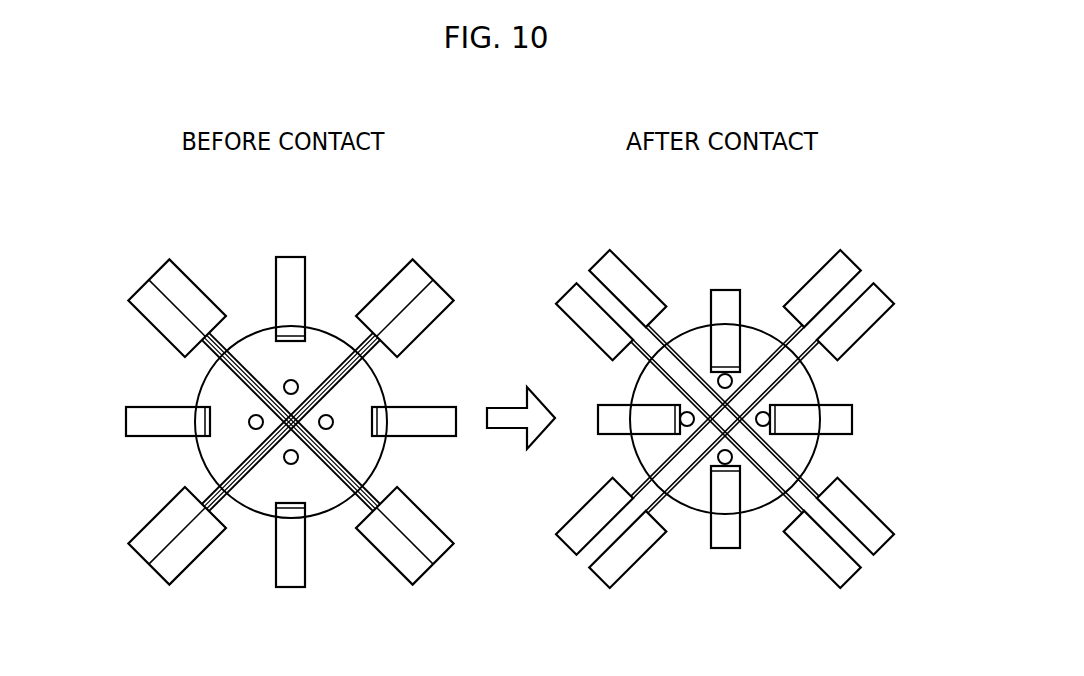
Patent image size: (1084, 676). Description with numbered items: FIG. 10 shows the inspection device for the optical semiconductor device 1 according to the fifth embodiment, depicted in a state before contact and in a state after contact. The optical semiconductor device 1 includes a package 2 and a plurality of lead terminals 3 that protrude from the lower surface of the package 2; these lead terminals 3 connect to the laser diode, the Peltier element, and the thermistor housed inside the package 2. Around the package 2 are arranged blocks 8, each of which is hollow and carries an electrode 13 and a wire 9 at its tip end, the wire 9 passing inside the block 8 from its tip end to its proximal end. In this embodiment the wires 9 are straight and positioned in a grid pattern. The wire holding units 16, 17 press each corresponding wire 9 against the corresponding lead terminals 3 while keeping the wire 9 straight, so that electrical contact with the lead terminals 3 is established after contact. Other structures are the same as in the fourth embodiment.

The optical semiconductor device 1 is at (496, 400).
The package 2 is at (204, 389).
The lead terminal 3 is at (292, 379).
The block 8 is at (291, 257).
The wire 9 is at (378, 343).
The electrode 13 is at (276, 346).
The wire holding unit 16 is at (394, 281).
The wire holding unit 17 is at (144, 550).